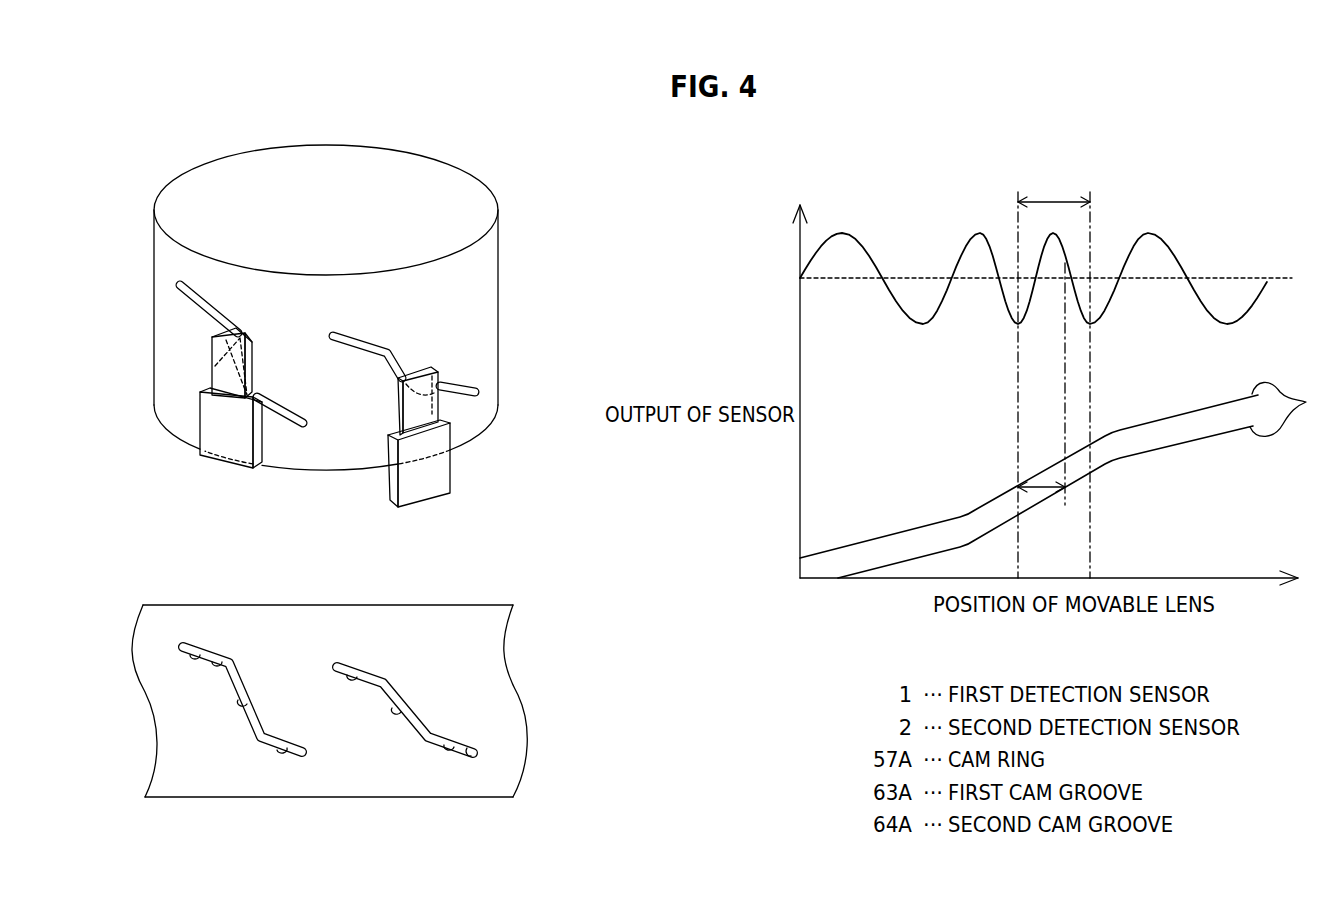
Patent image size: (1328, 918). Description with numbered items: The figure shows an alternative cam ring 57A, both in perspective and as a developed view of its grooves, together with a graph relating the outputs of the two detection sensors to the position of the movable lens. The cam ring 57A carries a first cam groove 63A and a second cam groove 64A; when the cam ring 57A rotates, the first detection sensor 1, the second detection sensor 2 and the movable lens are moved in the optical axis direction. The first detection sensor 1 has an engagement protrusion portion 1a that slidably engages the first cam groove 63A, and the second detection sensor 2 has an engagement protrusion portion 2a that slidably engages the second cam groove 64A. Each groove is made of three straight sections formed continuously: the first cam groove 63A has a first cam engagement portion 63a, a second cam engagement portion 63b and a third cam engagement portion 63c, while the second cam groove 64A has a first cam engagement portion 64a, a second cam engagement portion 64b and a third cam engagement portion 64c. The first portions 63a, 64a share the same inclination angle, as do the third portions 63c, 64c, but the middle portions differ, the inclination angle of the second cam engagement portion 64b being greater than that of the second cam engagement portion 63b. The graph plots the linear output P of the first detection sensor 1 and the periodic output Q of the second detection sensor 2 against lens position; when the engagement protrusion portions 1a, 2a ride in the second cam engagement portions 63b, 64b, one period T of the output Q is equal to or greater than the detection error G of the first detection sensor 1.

The first detection sensor 1 is at (218, 357).
The engagement protrusion portion 1a is at (215, 365).
The second detection sensor 2 is at (427, 410).
The engagement protrusion portion 2a is at (440, 398).
The cam ring 57A is at (485, 313).
The first cam groove 63A is at (190, 302).
The first cam engagement portion 63a is at (217, 668).
The second cam engagement portion 63b is at (242, 703).
The third cam engagement portion 63c is at (290, 755).
The second cam groove 64A is at (468, 388).
The first cam engagement portion 64a is at (363, 685).
The second cam engagement portion 64b is at (400, 710).
The third cam engagement portion 64c is at (453, 755).
The periodic output Q is at (1255, 303).
The linear output P is at (1306, 402).
The period T is at (1054, 191).
The detection error G is at (1041, 503).